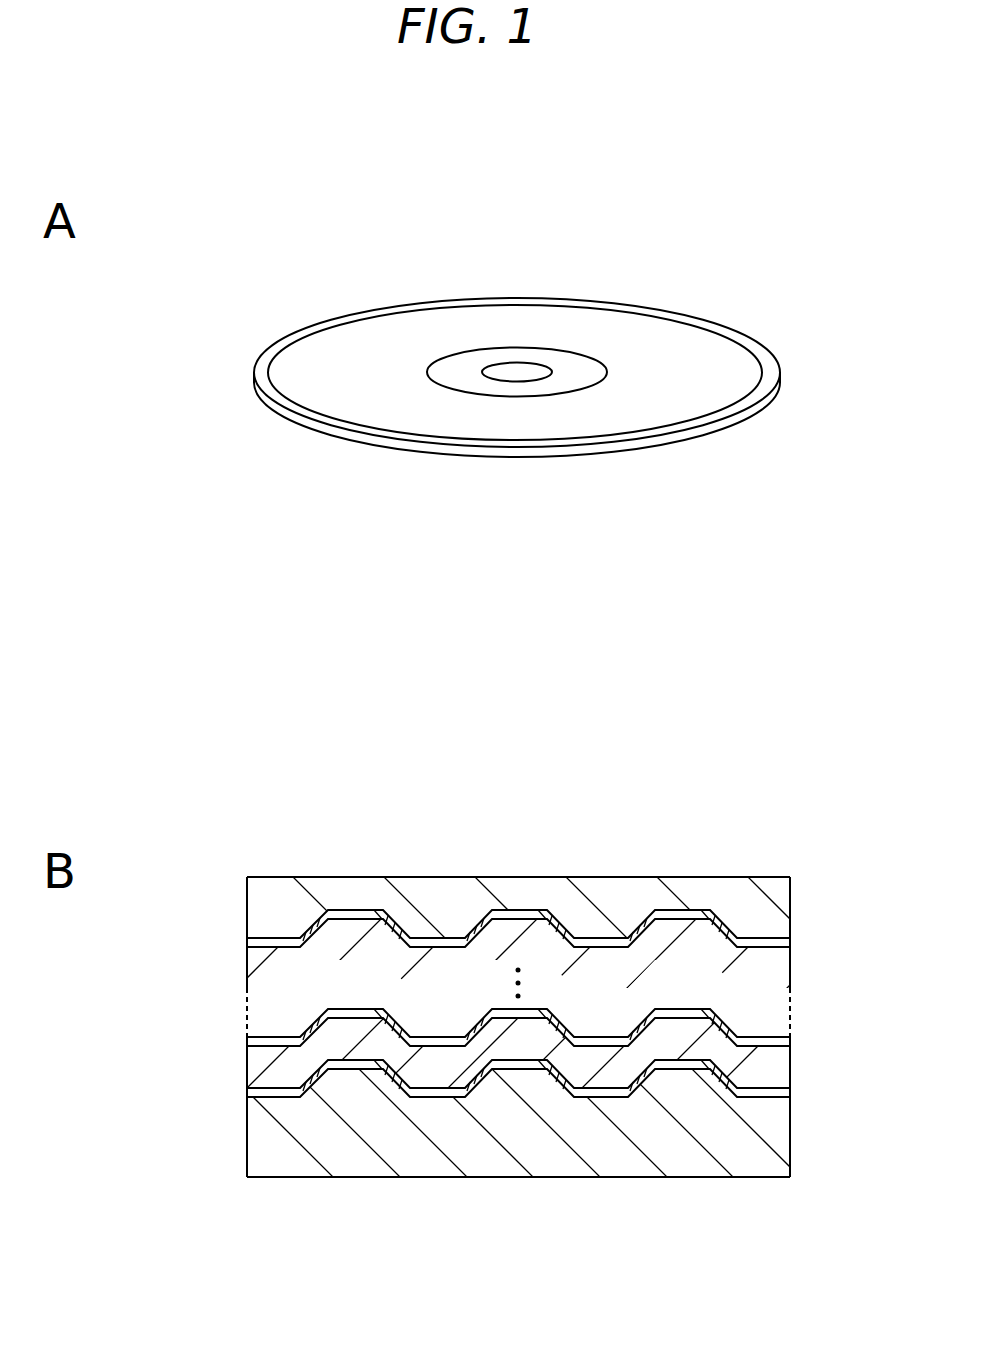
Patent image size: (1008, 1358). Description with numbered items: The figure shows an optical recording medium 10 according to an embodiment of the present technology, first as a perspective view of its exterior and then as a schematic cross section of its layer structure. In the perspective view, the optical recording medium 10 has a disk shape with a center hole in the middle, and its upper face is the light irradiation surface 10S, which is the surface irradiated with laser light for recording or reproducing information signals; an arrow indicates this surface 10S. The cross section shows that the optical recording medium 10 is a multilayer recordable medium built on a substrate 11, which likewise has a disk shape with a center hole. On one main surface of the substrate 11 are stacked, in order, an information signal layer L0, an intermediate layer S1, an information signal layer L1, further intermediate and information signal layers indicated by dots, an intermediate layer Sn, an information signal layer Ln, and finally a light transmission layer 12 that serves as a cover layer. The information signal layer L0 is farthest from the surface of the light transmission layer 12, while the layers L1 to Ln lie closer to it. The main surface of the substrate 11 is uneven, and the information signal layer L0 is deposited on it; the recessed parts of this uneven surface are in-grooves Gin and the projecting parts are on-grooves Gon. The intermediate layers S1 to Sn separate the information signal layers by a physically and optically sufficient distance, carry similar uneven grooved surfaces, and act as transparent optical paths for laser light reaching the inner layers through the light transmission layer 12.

The optical recording medium 10 is at (542, 708).
The light irradiation surface 10S is at (706, 352).
The light transmission layer 12 is at (778, 906).
The information signal layer Ln is at (773, 943).
The intermediate layer Sn is at (777, 969).
The information signal layer L1 is at (778, 1043).
The intermediate layer S1 is at (777, 1071).
The information signal layer L0 is at (777, 1093).
The substrate 11 is at (775, 1147).
The in-groove Gin is at (445, 1093).
The on-groove Gon is at (528, 1068).